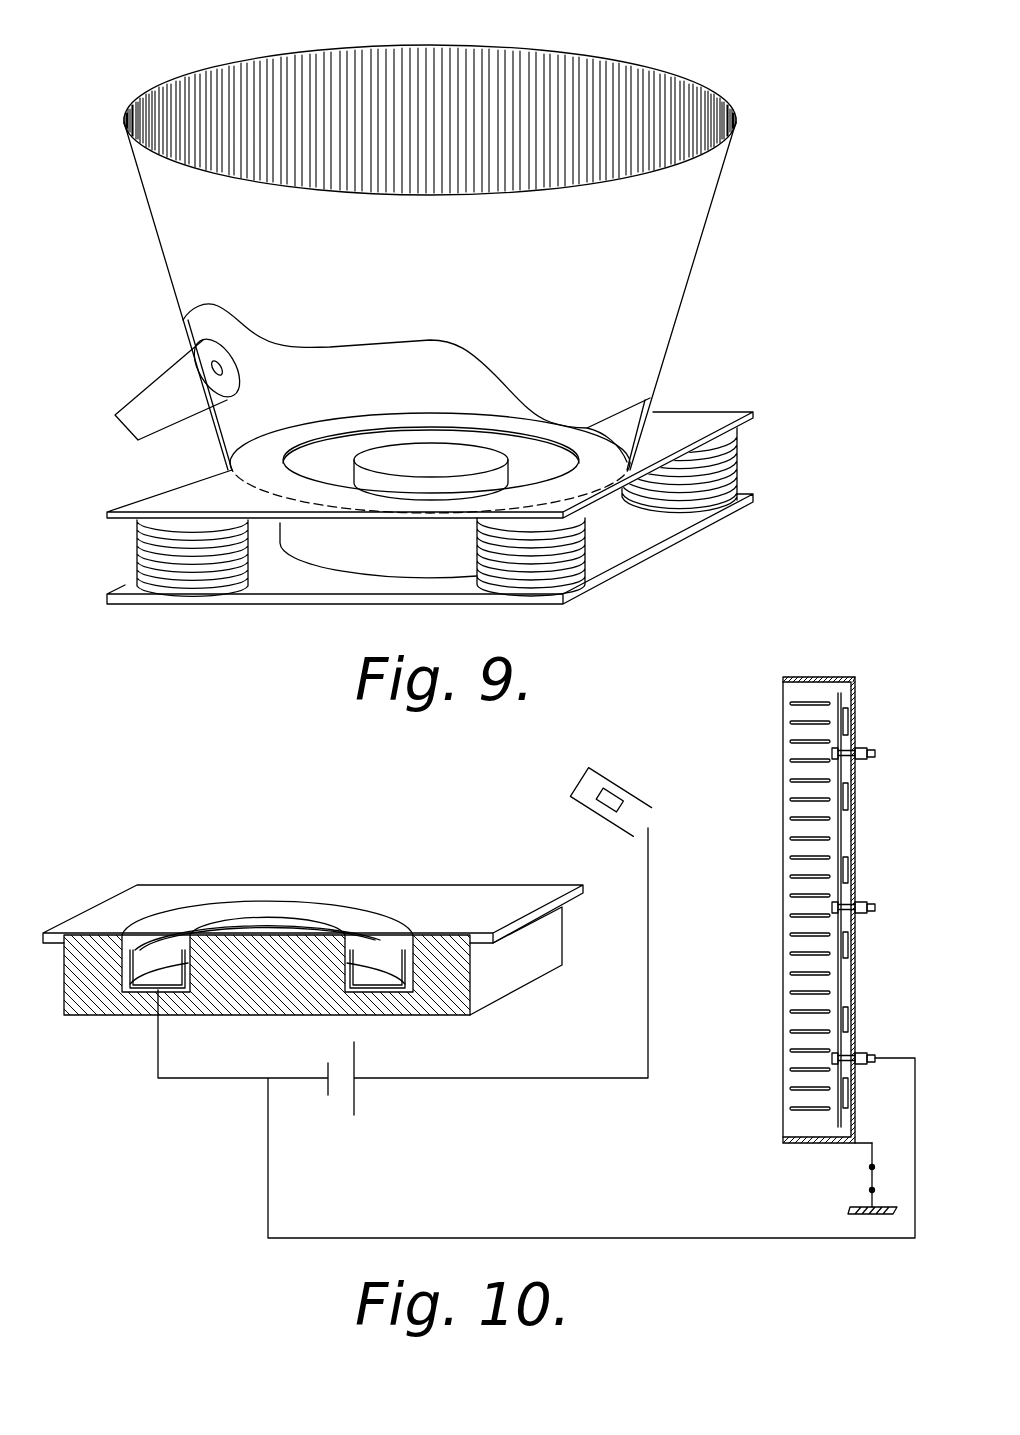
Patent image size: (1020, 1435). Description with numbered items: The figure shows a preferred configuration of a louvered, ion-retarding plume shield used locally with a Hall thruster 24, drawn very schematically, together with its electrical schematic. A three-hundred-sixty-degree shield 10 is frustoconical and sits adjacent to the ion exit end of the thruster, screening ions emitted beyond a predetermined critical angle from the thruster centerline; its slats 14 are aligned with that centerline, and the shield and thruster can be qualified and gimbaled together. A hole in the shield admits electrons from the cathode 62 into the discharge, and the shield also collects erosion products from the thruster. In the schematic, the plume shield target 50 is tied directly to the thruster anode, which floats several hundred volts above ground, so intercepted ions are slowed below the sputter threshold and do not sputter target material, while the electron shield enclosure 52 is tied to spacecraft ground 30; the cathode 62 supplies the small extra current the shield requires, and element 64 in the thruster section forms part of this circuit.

In FIG. 9, the 360-degree shield 10 is at (745, 224).
In FIG. 9, the slats 14 is at (607, 68).
In FIG. 10, the slats 14 is at (790, 703).
In FIG. 9, the Hall thruster 24 is at (370, 550).
In FIG. 10, the Hall thruster 24 is at (448, 885).
In FIG. 10, the ground 30 is at (860, 1207).
In FIG. 10, the plume shield target 50 is at (785, 985).
In FIG. 10, the housing 52 is at (808, 677).
In FIG. 9, the cathode 62 is at (142, 405).
In FIG. 10, the cathode 62 is at (622, 782).
In FIG. 10, the transducer element 64 is at (148, 985).